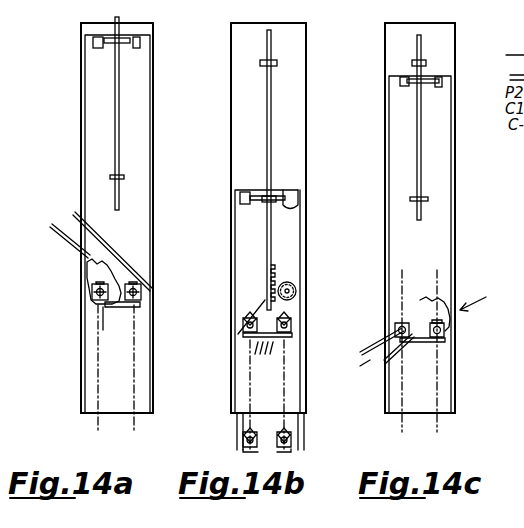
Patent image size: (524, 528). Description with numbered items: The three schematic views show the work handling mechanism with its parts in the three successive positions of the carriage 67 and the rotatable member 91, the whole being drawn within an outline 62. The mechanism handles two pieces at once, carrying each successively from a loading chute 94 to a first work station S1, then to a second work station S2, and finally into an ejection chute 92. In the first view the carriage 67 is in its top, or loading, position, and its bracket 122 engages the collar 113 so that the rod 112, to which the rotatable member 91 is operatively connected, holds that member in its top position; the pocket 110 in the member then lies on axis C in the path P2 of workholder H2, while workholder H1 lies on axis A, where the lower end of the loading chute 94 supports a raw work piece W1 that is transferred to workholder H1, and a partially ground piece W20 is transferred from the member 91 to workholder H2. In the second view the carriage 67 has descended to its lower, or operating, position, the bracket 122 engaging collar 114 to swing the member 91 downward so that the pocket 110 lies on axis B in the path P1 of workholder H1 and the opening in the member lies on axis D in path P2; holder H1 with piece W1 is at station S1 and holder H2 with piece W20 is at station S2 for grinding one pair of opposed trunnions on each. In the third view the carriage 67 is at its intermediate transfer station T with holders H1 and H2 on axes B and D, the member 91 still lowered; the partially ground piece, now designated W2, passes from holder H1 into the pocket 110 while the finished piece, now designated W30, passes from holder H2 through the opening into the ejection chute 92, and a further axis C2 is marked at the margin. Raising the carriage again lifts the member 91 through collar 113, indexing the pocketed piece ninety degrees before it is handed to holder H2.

In FIG. 14A, the housing 62 is at (153, 383).
In FIG. 14B, the housing 62 is at (306, 127).
In FIG. 14C, the housing 62 is at (455, 50).
In FIG. 14A, the carriage 67 is at (140, 99).
In FIG. 14B, the carriage 67 is at (288, 246).
In FIG. 14C, the carriage 67 is at (438, 147).
In FIG. 14A, the rod 112 is at (115, 129).
In FIG. 14B, the rod 112 is at (267, 128).
In FIG. 14C, the rod 112 is at (417, 138).
In FIG. 14A, the collar 113 is at (121, 40).
In FIG. 14B, the collar 113 is at (277, 62).
In FIG. 14C, the collar 113 is at (426, 63).
In FIG. 14A, the collar 114 is at (110, 178).
In FIG. 14B, the collar 114 is at (290, 207).
In FIG. 14C, the collar 114 is at (428, 200).
In FIG. 14A, the bracket 122 is at (93, 45).
In FIG. 14B, the bracket 122 is at (246, 200).
In FIG. 14C, the bracket 122 is at (400, 83).
In FIG. 14A, the loading chute 94 is at (87, 249).
In FIG. 14A, the rotatable member 91 is at (87, 265).
In FIG. 14B, the rotatable member 91 is at (298, 305).
In FIG. 14C, the rotatable member 91 is at (450, 304).
In FIG. 14B, the ejection chute 92 is at (357, 381).
In FIG. 14C, the ejection chute 92 is at (369, 374).
In FIG. 14A, the pocket 110 is at (121, 318).
In FIG. 14B, the pocket 110 is at (270, 340).
In FIG. 14C, the pocket 110 is at (440, 340).
In FIG. 14A, the work piece W20 is at (92, 289).
In FIG. 14B, the work piece W20 is at (243, 441).
In FIG. 14A, the work piece W1 is at (143, 284).
In FIG. 14B, the work piece W1 is at (300, 433).
In FIG. 14C, the workpiece W2 is at (444, 326).
In FIG. 14B, the workpiece W30 is at (359, 319).
In FIG. 14C, the workpiece W30 is at (386, 340).
In FIG. 14A, the workholder H1 is at (150, 292).
In FIG. 14B, the workholder H1 is at (303, 421).
In FIG. 14C, the workholder H1 is at (420, 373).
In FIG. 14A, the workholder H2 is at (93, 296).
In FIG. 14B, the workholder H2 is at (240, 428).
In FIG. 14C, the workholder H2 is at (420, 353).
In FIG. 14A, the axis A is at (144, 300).
In FIG. 14B, the axis A is at (289, 291).
In FIG. 14B, the axis B is at (292, 328).
In FIG. 14C, the axis B is at (445, 336).
In FIG. 14A, the axis C is at (96, 304).
In FIG. 14C, the point C2 is at (510, 247).
In FIG. 14B, the axis D is at (242, 334).
In FIG. 14C, the axis D is at (405, 325).
In FIG. 14C, the transfer station T is at (480, 296).
In FIG. 14A, the path P1 is at (134, 425).
In FIG. 14B, the path P1 is at (290, 382).
In FIG. 14C, the path P1 is at (437, 425).
In FIG. 14A, the path P2 is at (96, 425).
In FIG. 14B, the path P2 is at (250, 372).
In FIG. 14C, the path P2 is at (402, 420).
In FIG. 14B, the first work station S1 is at (295, 453).
In FIG. 14B, the second work station S2 is at (240, 452).